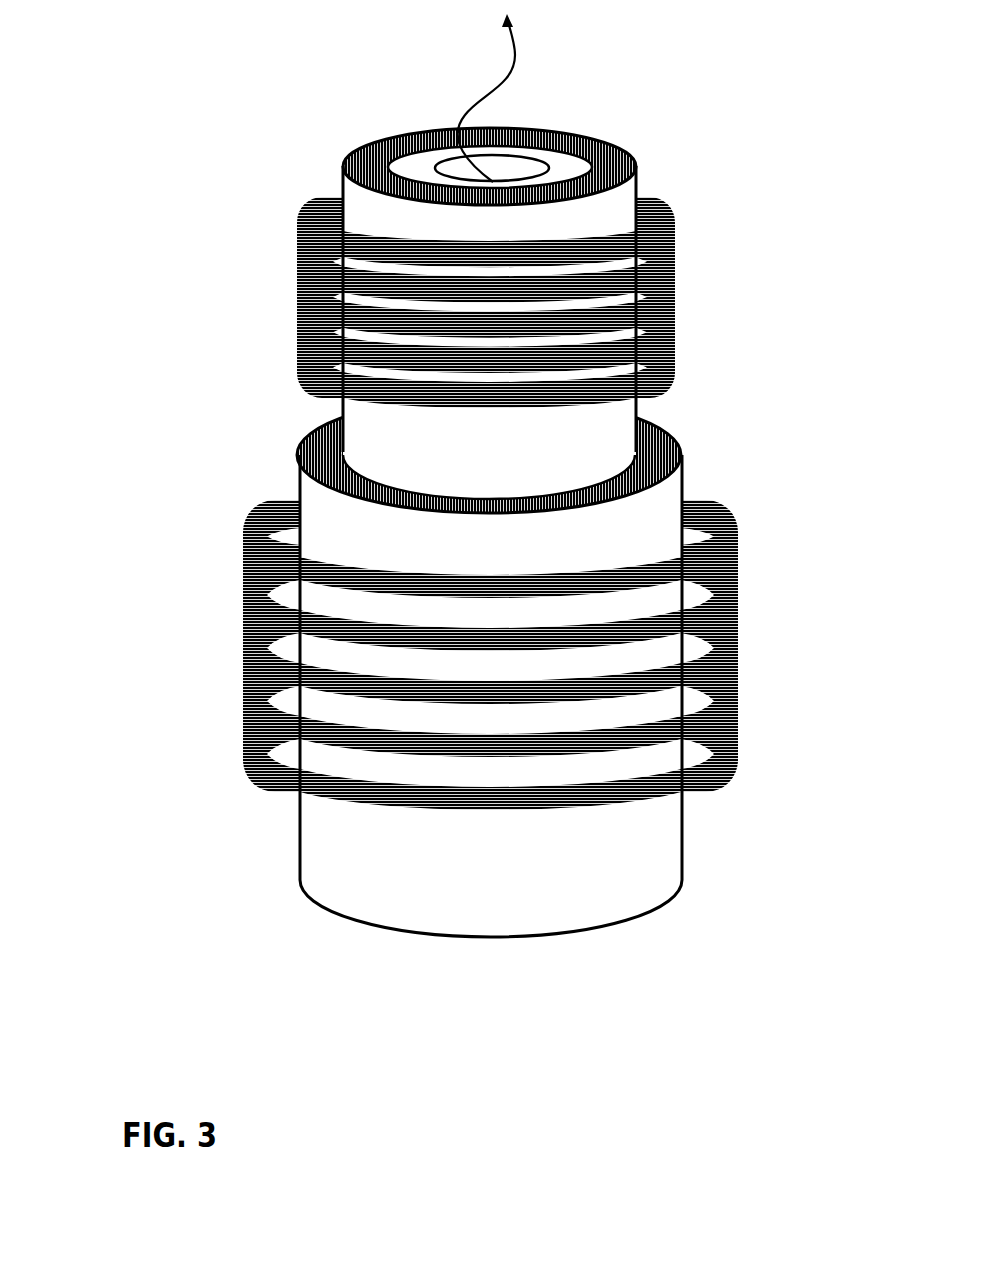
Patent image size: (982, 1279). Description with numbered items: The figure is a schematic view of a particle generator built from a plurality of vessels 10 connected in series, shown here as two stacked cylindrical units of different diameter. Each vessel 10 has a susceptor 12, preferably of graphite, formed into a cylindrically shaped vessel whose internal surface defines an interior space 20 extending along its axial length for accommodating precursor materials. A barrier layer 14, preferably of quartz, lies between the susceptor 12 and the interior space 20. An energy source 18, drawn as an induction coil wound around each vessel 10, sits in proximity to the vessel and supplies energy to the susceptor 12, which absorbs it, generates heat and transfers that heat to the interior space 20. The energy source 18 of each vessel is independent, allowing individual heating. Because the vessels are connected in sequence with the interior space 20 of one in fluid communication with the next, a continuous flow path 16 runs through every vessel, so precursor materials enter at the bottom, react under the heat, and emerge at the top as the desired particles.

The vessel 10 is at (688, 126).
The susceptor 12 is at (370, 158).
The barrier layer 14 is at (417, 160).
The continuous flow path 16 is at (497, 938).
The energy source 18 is at (305, 262).
The interior space 20 is at (533, 168).